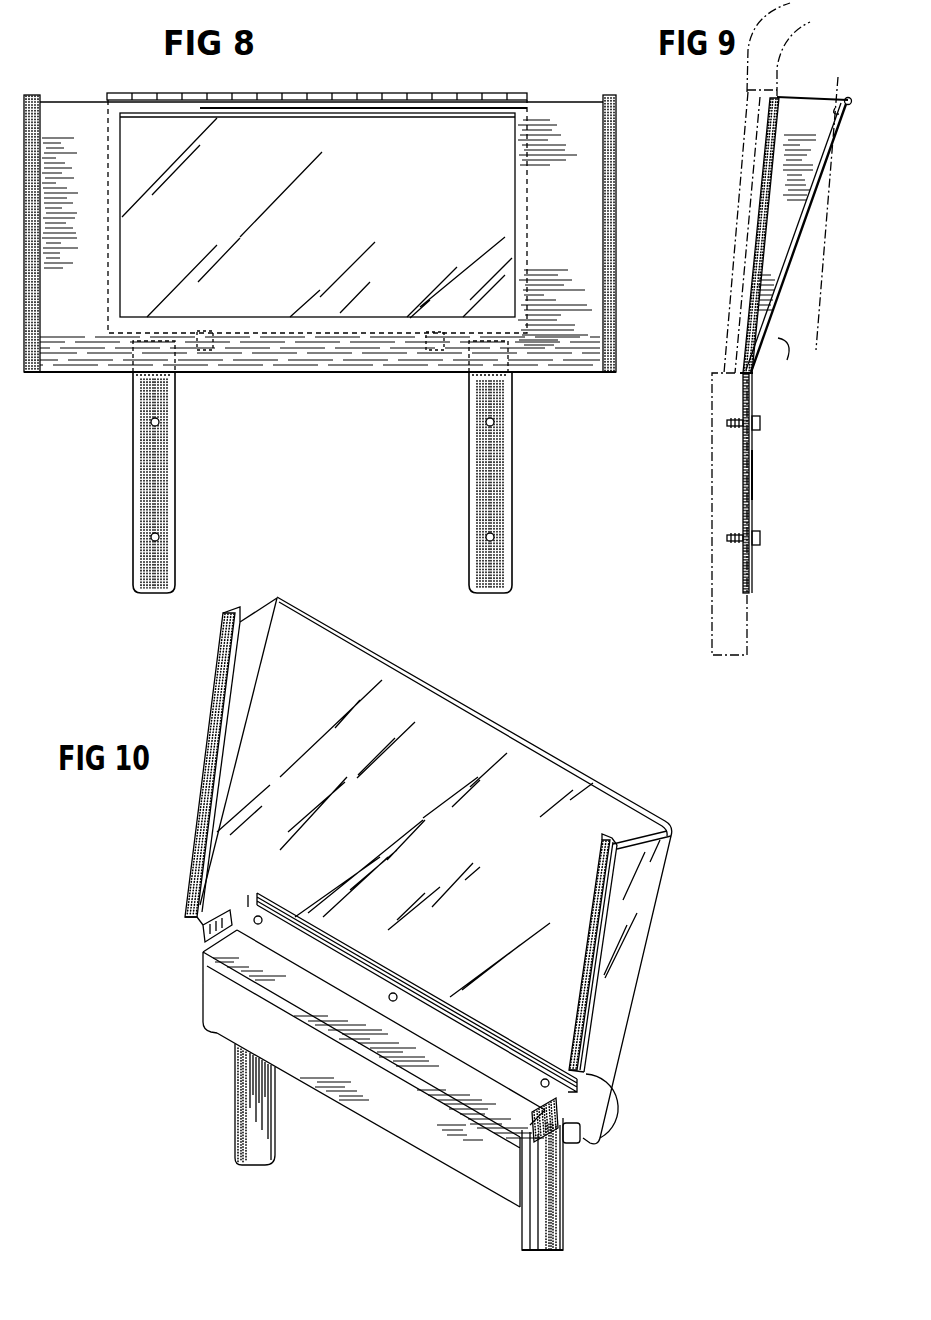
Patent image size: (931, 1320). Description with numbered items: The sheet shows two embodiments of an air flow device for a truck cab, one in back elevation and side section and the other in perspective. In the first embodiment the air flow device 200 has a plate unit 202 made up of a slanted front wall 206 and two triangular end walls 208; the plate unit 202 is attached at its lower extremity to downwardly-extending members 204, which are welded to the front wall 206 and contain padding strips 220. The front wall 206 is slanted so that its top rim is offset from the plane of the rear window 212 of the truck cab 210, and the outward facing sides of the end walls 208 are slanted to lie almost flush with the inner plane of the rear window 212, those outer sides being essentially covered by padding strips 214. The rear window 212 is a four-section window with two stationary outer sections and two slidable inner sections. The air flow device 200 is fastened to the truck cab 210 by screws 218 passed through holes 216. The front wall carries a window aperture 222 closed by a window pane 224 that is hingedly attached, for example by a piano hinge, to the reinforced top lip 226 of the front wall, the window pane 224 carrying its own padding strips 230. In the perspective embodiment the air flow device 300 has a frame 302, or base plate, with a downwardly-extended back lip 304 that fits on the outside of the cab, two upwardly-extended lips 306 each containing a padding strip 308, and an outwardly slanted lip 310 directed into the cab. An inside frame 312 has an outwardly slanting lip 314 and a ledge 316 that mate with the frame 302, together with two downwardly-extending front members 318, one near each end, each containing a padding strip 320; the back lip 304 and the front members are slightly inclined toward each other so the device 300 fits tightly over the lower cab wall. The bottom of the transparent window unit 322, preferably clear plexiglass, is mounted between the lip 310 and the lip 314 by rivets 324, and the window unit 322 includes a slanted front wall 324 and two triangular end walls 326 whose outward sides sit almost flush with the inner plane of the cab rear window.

In FIG. 8, the air flow device 200 is at (288, 380).
In FIG. 8, the plate unit 202 is at (571, 358).
In FIG. 8, the downwardly-extending members 204 is at (176, 478).
In FIG. 9, the downwardly-extending members 204 is at (752, 404).
In FIG. 8, the front wall 206 is at (567, 115).
In FIG. 9, the front wall 206 is at (745, 354).
In FIG. 9, the end walls 208 is at (803, 107).
In FIG. 9, the truck cab 210 is at (711, 520).
In FIG. 9, the rear window 212 is at (757, 167).
In FIG. 8, the padding strips 214 is at (616, 240).
In FIG. 9, the padding strips 214 is at (750, 287).
In FIG. 8, the holes 216 is at (160, 424).
In FIG. 9, the screws 218 is at (762, 538).
In FIG. 8, the padding strips 220 is at (158, 518).
In FIG. 9, the padding strips 220 is at (750, 473).
In FIG. 8, the window aperture 222 is at (330, 158).
In FIG. 8, the window pane 224 is at (415, 125).
In FIG. 9, the window pane 224 is at (826, 291).
In FIG. 9, the reinforced top lip 226 is at (847, 96).
In FIG. 9, the padding strips 230 is at (793, 237).
In FIG. 10, the air flow device 300 is at (561, 752).
In FIG. 10, the frame 302 is at (405, 1073).
In FIG. 10, the downwardly-extended lip 304 is at (418, 1145).
In FIG. 10, the upwardly-extended lips 306 is at (207, 932).
In FIG. 10, the padding strip 308 is at (560, 1148).
In FIG. 10, the outwardly slanted lip 310 is at (385, 1005).
In FIG. 10, the inside frame 312 is at (565, 1185).
In FIG. 10, the outwardly slanting lip 314 is at (585, 1090).
In FIG. 10, the ledge 316 is at (590, 1135).
In FIG. 10, the downwardly-extending members 318 is at (560, 1213).
In FIG. 10, the padding strip 320 is at (560, 1245).
In FIG. 10, the transparent window unit 322 is at (590, 800).
In FIG. 10, the rivets 324 is at (418, 697).
In FIG. 10, the end walls 326 is at (258, 610).